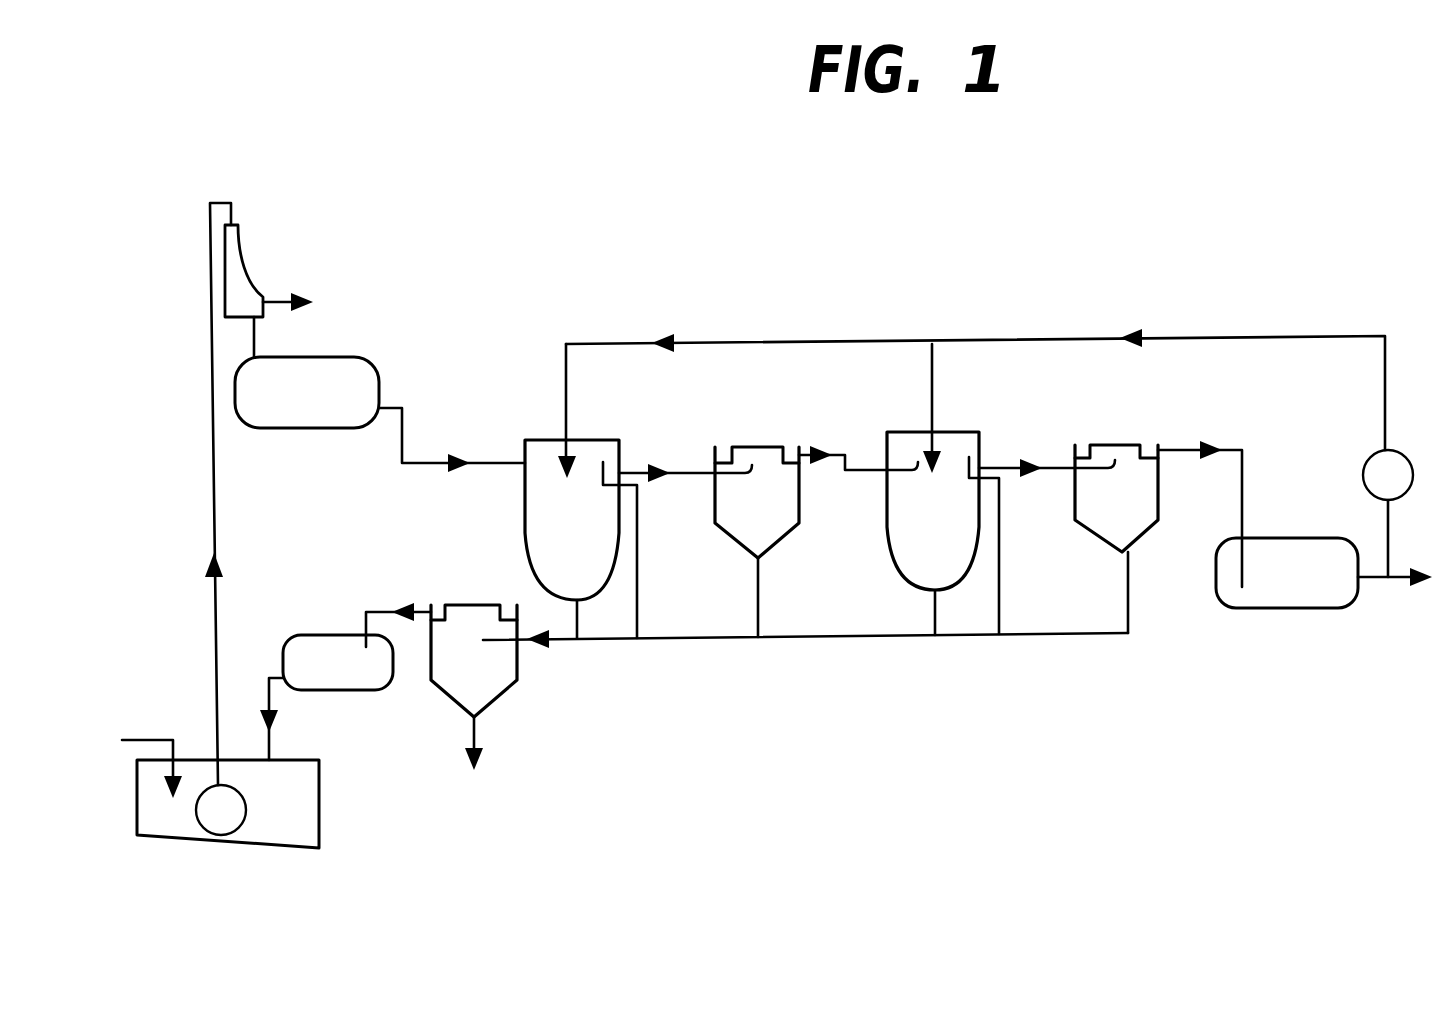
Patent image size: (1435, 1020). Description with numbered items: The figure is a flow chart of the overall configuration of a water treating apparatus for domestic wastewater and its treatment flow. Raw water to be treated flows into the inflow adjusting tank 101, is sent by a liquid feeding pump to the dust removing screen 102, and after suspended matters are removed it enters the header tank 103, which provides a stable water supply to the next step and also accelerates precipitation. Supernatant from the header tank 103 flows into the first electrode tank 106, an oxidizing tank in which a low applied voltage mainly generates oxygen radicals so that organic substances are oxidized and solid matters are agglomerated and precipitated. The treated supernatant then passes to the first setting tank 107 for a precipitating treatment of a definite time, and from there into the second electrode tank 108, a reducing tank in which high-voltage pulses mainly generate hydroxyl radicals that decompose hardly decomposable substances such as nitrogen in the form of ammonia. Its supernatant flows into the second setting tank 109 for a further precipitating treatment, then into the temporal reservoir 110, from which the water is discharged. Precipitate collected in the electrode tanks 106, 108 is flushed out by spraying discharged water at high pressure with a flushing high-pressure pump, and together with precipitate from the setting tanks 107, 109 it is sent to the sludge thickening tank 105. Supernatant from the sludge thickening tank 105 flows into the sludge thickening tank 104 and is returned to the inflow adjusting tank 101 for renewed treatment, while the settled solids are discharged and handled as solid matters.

The inflow adjusting tank 101 is at (320, 788).
The dust removing screen 102 is at (247, 267).
The header tank 103 is at (295, 429).
The sludge thickening tank 104 is at (318, 635).
The sludge thickening tank 105 is at (517, 665).
The first electrode tank 106 is at (525, 522).
The first setting tank 107 is at (748, 447).
The second electrode tank 108 is at (910, 432).
The second setting tank 109 is at (1108, 442).
The temporal reservoir 110 is at (1278, 610).